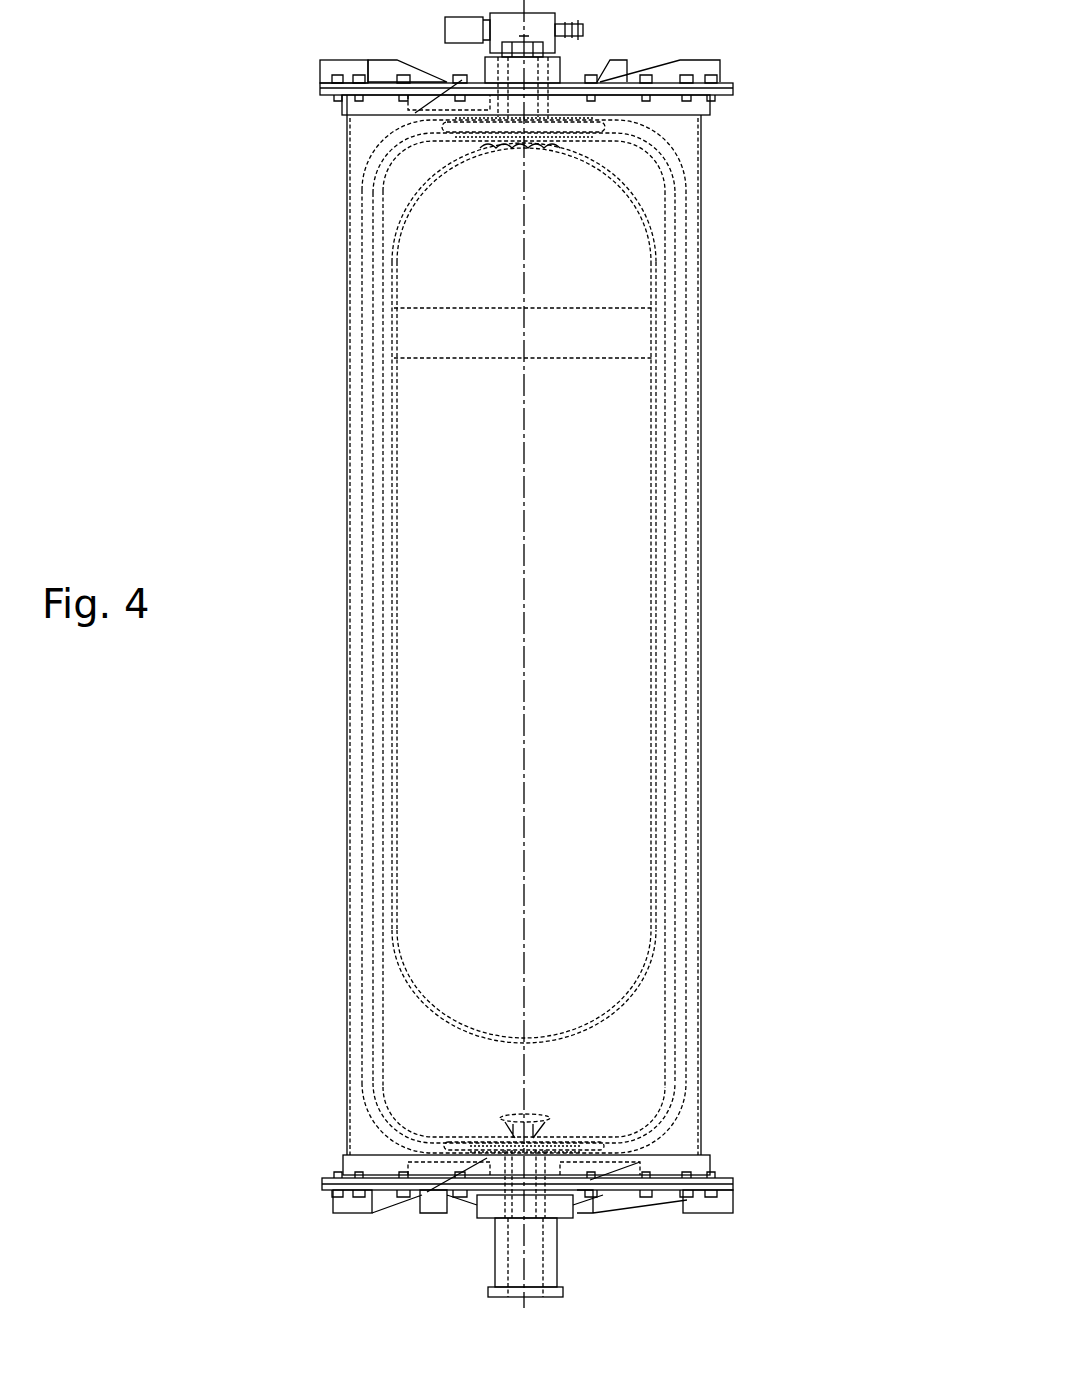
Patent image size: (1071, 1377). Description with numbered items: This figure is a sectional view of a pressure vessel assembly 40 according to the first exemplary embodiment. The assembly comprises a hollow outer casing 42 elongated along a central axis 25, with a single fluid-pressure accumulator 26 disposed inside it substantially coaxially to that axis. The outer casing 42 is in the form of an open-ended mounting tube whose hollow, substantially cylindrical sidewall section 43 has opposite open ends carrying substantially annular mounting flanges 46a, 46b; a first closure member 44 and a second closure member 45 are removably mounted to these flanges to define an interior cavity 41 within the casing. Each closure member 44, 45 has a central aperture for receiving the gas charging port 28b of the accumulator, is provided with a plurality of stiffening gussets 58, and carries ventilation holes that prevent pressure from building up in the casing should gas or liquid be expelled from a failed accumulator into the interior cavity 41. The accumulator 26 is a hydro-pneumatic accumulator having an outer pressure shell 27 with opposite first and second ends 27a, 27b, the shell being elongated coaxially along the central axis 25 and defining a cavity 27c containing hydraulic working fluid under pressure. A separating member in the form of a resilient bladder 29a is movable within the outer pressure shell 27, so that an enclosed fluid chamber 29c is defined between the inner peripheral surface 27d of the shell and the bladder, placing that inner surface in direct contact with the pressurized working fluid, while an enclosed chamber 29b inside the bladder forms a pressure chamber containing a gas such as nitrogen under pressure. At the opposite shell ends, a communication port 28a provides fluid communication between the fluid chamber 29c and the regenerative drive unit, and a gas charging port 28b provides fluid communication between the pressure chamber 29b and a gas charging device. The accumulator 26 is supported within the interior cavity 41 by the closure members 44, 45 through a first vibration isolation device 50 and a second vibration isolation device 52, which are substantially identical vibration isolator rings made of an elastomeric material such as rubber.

The pressure vessel assembly 40 is at (268, 495).
The central axis 25 is at (527, 610).
The fluid-pressure accumulator 26 is at (688, 496).
The outer pressure shell 27 is at (361, 592).
The first end of outer pressure shell 27a is at (420, 1147).
The second end of outer pressure shell 27b is at (410, 128).
The cavity 27c is at (418, 1055).
The inner peripheral surface 27d is at (393, 1097).
The communication port 28a is at (495, 1255).
The gas charging port 28b is at (583, 45).
The resilient bladder 29a is at (620, 1007).
The enclosed chamber 29b is at (617, 907).
The enclosed fluid chamber 29c is at (632, 1087).
The interior cavity 41 is at (683, 135).
The outer casing 42 is at (703, 665).
The sidewall section 43 is at (346, 708).
The first closure member 44 is at (327, 1197).
The second closure member 45 is at (718, 78).
The mounting flange 46a is at (327, 1177).
The mounting flange 46b is at (322, 95).
The first vibration isolation device 50 is at (645, 1168).
The second vibration isolation device 52 is at (700, 110).
The stiffening gussets 58 is at (326, 68).